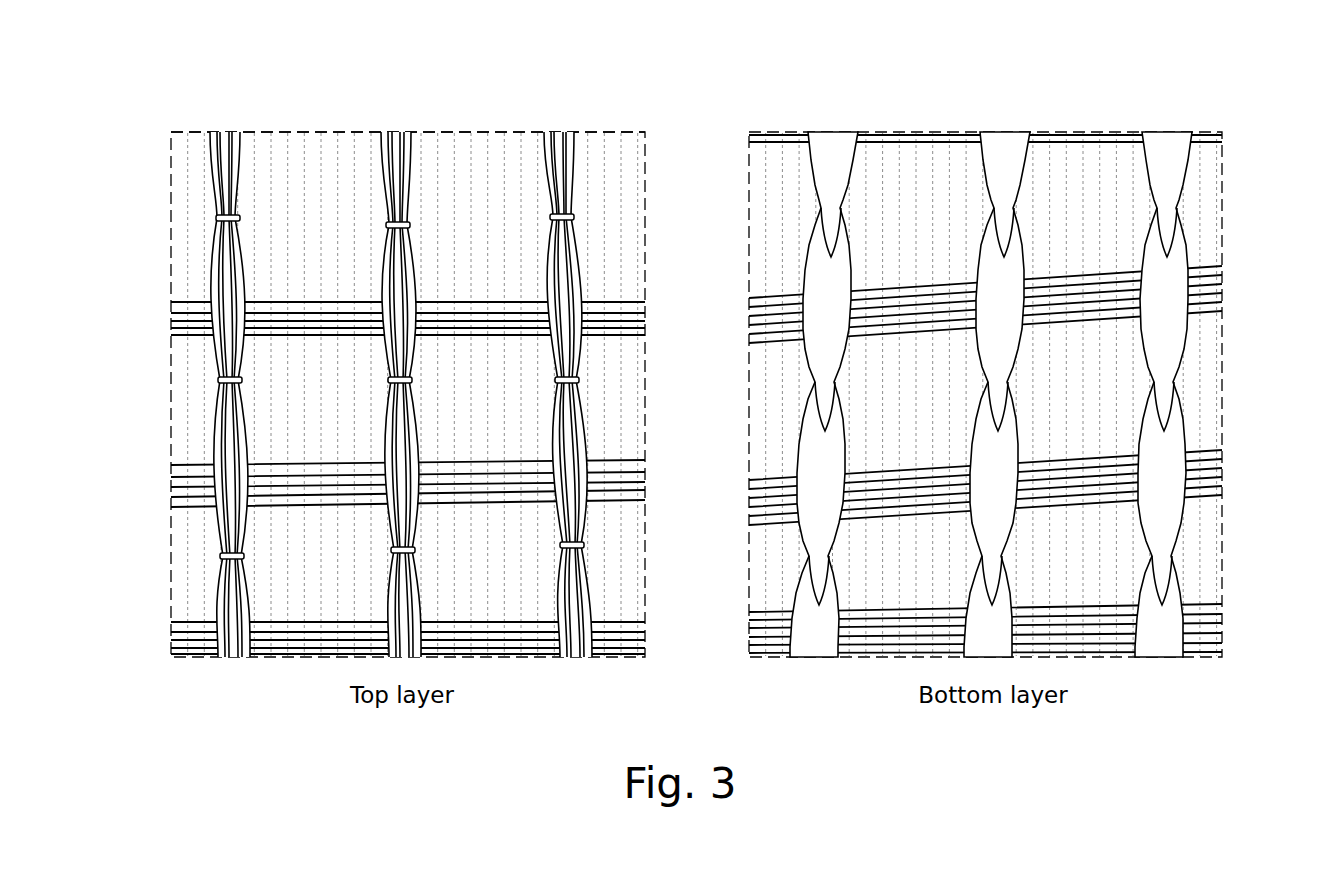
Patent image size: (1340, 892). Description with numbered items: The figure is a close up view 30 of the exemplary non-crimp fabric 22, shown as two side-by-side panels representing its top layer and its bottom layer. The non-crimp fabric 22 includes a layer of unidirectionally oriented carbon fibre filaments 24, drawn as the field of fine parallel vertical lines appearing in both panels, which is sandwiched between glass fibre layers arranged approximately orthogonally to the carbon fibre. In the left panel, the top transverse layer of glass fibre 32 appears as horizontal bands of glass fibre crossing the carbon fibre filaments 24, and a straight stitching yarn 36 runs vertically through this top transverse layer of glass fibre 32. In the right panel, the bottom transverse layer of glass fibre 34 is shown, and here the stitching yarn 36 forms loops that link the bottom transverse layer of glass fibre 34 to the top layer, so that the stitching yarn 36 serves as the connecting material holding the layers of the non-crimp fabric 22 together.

The non-crimp fabric 22 is at (196, 113).
The layer of unidirectionally oriented carbon fibre filaments 24 is at (302, 150).
The close up view 30 is at (135, 155).
The top transverse layer of glass fibre 32 is at (332, 303).
The bottom transverse layer of glass fibre 34 is at (1100, 292).
The stitching yarn 36 is at (224, 450).